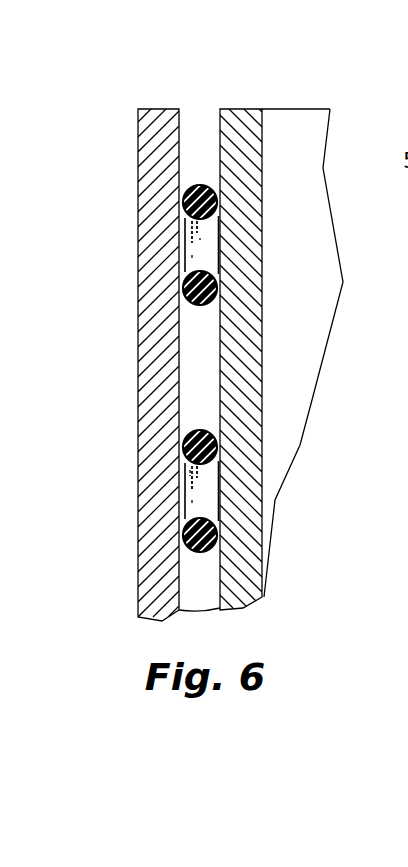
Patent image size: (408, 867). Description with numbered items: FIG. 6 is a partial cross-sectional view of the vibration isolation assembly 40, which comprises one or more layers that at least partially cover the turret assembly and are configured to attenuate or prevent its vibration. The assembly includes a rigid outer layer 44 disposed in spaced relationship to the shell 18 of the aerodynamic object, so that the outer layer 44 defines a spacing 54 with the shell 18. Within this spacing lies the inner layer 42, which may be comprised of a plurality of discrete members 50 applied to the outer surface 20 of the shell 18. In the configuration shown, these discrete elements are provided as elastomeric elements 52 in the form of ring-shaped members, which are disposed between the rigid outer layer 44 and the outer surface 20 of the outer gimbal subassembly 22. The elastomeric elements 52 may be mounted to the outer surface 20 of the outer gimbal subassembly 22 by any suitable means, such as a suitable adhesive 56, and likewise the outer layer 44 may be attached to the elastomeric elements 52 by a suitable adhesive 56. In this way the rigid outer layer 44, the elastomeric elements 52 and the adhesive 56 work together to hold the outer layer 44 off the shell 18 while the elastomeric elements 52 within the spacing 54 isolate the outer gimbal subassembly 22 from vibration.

The shell 18 is at (295, 326).
The outer surface 20 is at (222, 109).
The outer gimbal subassembly 22 is at (328, 109).
The vibration isolation assembly 40 is at (146, 325).
The inner layer 42 is at (188, 188).
The outer layer 44 is at (150, 136).
The discrete members 50 is at (195, 252).
The elastomeric elements 52 is at (197, 497).
The spacing 54 is at (138, 103).
The adhesive 56 is at (217, 208).